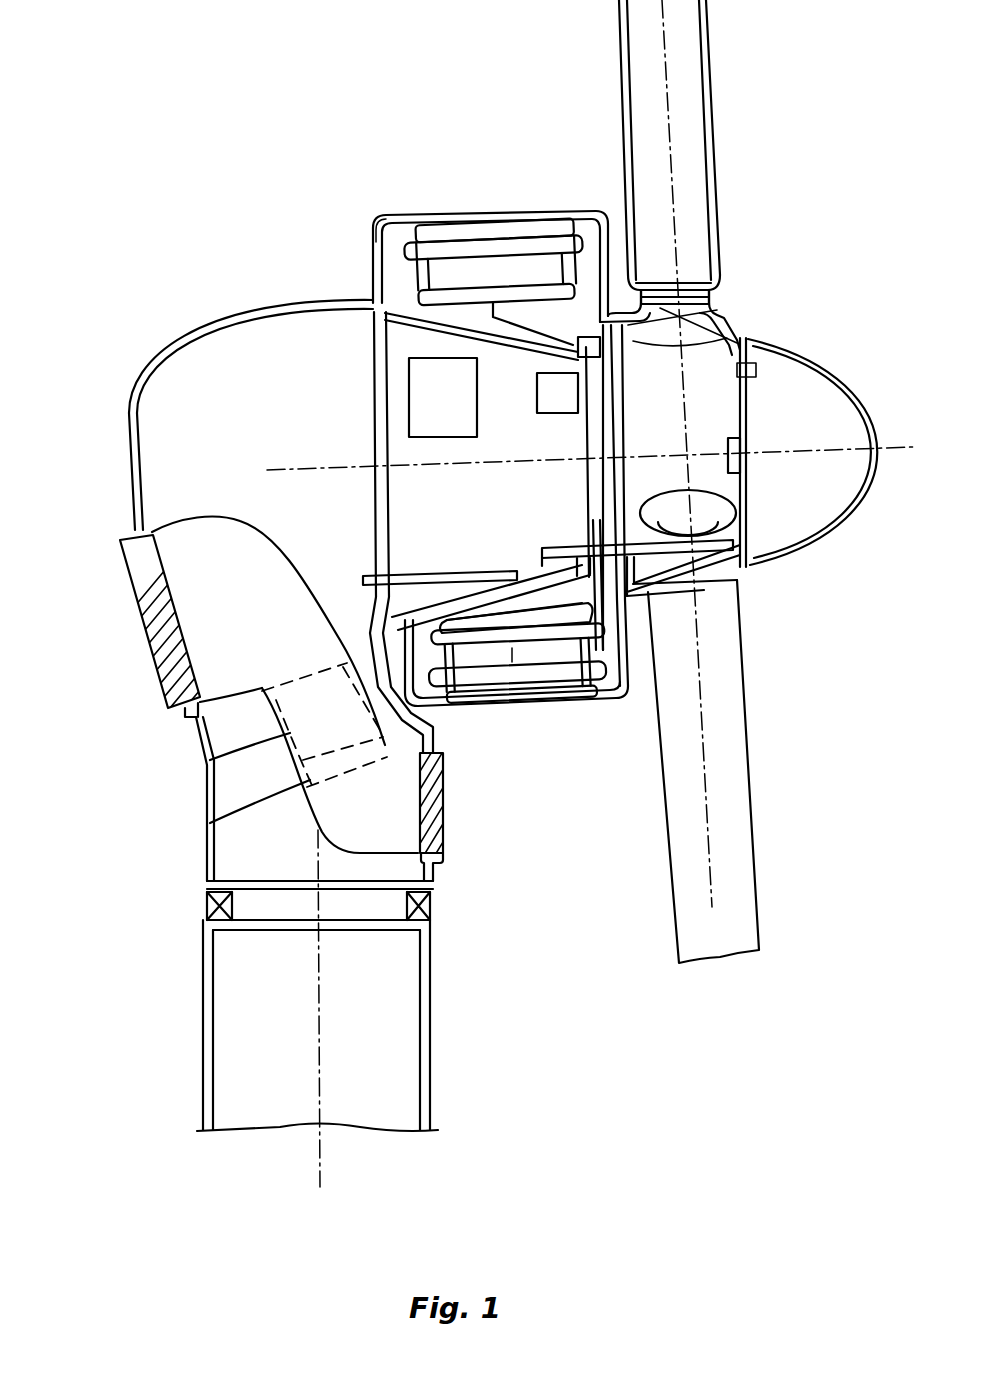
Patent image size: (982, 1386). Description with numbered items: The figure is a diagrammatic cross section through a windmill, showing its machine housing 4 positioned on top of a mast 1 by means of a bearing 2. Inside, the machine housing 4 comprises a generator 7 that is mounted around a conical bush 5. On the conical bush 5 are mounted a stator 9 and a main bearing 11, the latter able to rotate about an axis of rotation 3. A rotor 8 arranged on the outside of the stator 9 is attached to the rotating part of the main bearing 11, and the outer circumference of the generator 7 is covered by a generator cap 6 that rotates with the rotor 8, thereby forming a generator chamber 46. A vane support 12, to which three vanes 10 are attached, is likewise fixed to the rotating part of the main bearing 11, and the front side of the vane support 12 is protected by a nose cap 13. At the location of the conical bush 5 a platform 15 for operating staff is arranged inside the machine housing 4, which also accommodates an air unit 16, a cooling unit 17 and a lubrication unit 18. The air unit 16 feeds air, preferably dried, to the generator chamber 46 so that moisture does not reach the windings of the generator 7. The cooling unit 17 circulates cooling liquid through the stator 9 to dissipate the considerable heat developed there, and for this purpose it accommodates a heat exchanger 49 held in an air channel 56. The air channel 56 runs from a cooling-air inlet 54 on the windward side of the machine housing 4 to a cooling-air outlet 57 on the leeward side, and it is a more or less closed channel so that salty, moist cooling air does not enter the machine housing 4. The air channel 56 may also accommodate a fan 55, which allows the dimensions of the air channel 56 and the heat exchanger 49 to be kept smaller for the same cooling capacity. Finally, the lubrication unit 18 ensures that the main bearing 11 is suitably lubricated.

The mast 1 is at (203, 1040).
The bearing 2 is at (205, 897).
The axis of rotation 3 is at (271, 468).
The machine housing 4 is at (160, 323).
The conical bush 5 is at (375, 300).
The generator cap 6 is at (417, 230).
The generator 7 is at (472, 140).
The rotor 8 is at (560, 226).
The stator 9 is at (520, 240).
The vanes 10 is at (700, 107).
The main bearing 11 is at (712, 306).
The vane support 12 is at (715, 380).
The nose cap 13 is at (850, 393).
The platform 15 is at (440, 575).
The air unit 16 is at (409, 400).
The cooling unit 17 is at (197, 513).
The lubrication unit 18 is at (578, 398).
The generator chamber 46 is at (380, 224).
The heat exchanger 49 is at (210, 760).
The cooling-air inlet 54 is at (445, 805).
The fan 55 is at (210, 823).
The air channel 56 is at (243, 633).
The cooling-air outlet 57 is at (137, 580).